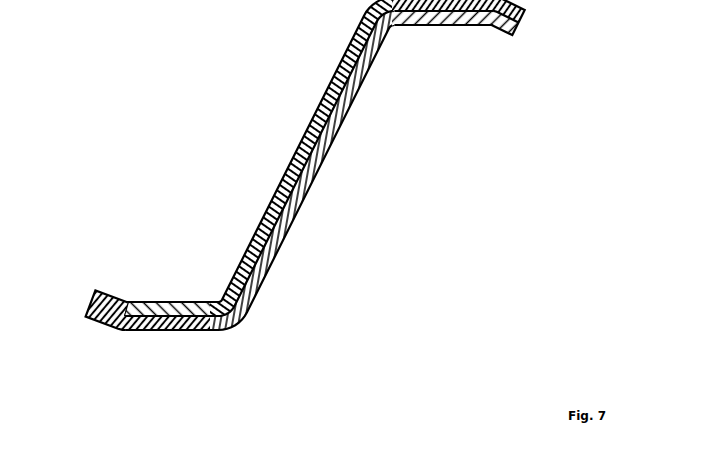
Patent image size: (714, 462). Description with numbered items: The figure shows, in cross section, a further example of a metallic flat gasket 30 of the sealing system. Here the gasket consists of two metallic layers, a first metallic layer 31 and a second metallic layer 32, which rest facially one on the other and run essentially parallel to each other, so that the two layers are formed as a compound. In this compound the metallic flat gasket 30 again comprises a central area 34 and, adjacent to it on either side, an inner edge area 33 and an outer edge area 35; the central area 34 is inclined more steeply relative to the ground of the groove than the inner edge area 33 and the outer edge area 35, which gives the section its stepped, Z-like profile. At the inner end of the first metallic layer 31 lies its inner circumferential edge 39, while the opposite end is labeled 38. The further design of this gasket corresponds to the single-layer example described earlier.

The metallic flat gasket 30 is at (305, 171).
The first metallic layer 31 is at (308, 120).
The second metallic layer 32 is at (360, 86).
The inner edge area 33 is at (442, 22).
The central area 34 is at (328, 149).
The outer edge area 35 is at (167, 303).
The lower bent edge lip 38 is at (88, 299).
The inner circumferential edge 39 is at (522, 17).